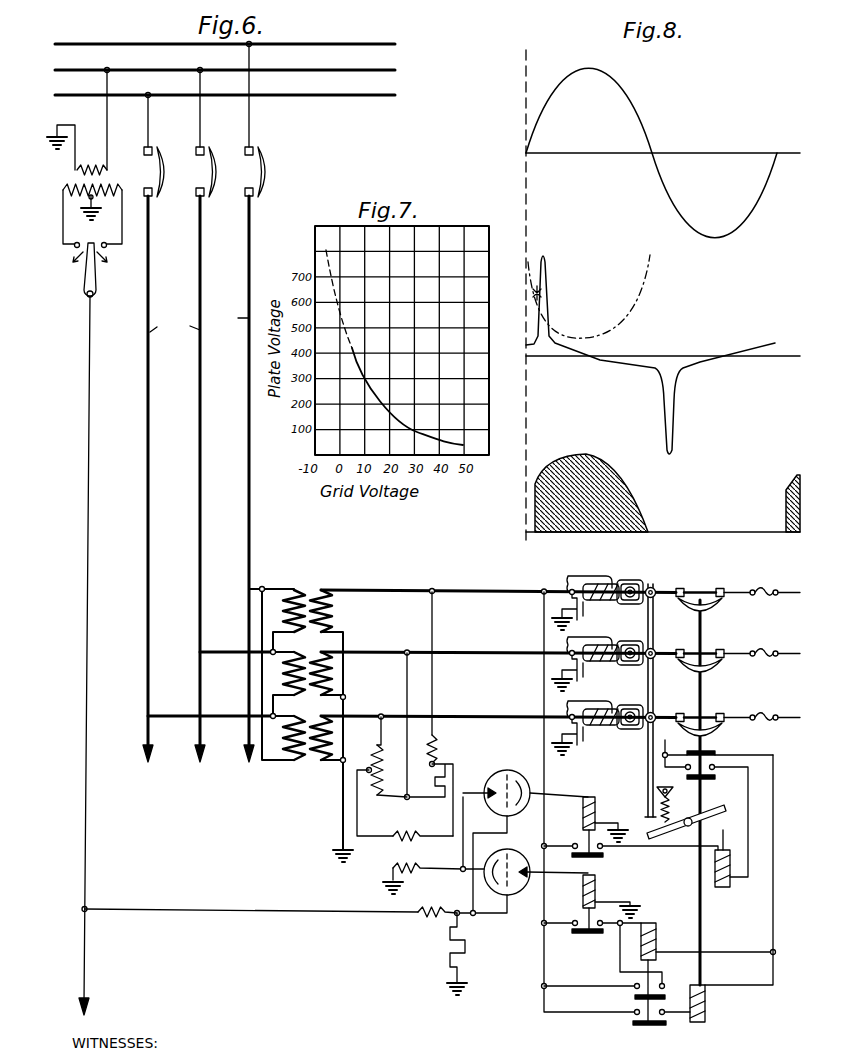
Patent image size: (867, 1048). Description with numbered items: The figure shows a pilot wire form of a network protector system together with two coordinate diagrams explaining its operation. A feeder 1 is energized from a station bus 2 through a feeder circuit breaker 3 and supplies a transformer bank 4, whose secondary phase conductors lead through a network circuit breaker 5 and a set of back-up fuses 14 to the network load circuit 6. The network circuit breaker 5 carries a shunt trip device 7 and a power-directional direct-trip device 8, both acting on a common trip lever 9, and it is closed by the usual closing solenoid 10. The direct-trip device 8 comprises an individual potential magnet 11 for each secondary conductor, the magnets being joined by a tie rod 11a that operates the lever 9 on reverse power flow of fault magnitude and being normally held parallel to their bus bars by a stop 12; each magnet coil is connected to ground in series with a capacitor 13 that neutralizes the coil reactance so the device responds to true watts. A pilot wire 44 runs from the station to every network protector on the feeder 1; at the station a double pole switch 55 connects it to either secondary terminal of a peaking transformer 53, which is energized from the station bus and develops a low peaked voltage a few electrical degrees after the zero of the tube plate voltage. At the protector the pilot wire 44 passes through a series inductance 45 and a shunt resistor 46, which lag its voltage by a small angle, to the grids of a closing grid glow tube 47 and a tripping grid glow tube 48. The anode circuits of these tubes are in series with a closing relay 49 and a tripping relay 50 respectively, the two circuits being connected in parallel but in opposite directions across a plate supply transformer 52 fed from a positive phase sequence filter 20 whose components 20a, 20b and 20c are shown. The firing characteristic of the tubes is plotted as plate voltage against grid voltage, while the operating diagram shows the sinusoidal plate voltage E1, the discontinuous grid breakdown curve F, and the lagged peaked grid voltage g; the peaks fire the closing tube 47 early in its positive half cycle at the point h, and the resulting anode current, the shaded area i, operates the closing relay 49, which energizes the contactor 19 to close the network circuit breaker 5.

In FIG. 6, the feeder 1 is at (249, 374).
In FIG. 6, the station bus 2 is at (326, 98).
In FIG. 6, the feeder circuit breaker 3 is at (293, 177).
In FIG. 6, the transformer bank 4 is at (313, 583).
In FIG. 6, the network circuit breaker 5 is at (708, 588).
In FIG. 6, the network load circuit 6 is at (807, 584).
In FIG. 6, the shunt trip device 7 is at (714, 889).
In FIG. 6, the power-directional direct-trip device 8 is at (633, 577).
In FIG. 6, the trip lever 9 is at (715, 811).
In FIG. 6, the closing motor or solenoid 10 is at (706, 1003).
In FIG. 6, the potential magnet 11 is at (613, 604).
In FIG. 6, the tie rod 11a is at (655, 634).
In FIG. 6, the stop 12 is at (652, 585).
In FIG. 6, the capacitor 13 is at (579, 616).
In FIG. 6, the back-up fuses 14 is at (776, 582).
In FIG. 6, the contactor 19 is at (658, 945).
In FIG. 6, the positive phase sequence filter 20 is at (404, 817).
In FIG. 6, the resistor 20a is at (441, 752).
In FIG. 6, the resistor 20b is at (430, 797).
In FIG. 6, the resistor 20c is at (378, 757).
In FIG. 6, the pilot wire 44 is at (89, 447).
In FIG. 6, the series inductance 45 is at (430, 920).
In FIG. 6, the shunt resistor 46 is at (449, 961).
In FIG. 6, the closing grid glow tube 47 is at (519, 851).
In FIG. 6, the tripping grid glow tube 48 is at (516, 767).
In FIG. 6, the closing relay 49 is at (598, 896).
In FIG. 6, the tripping relay 50 is at (596, 808).
In FIG. 6, the plate supply transformer 52 is at (419, 852).
In FIG. 6, the peaking transformer 53 is at (107, 178).
In FIG. 6, the double pole switch 55 is at (97, 292).
In FIG. 8, the sinusoidal plate voltage curve E1 is at (643, 121).
In FIG. 8, the peaked secondary voltage g is at (552, 262).
In FIG. 8, the tube breakdown point h is at (545, 296).
In FIG. 8, the grid breakdown voltage curve F is at (650, 293).
In FIG. 8, the anode current area i is at (645, 510).